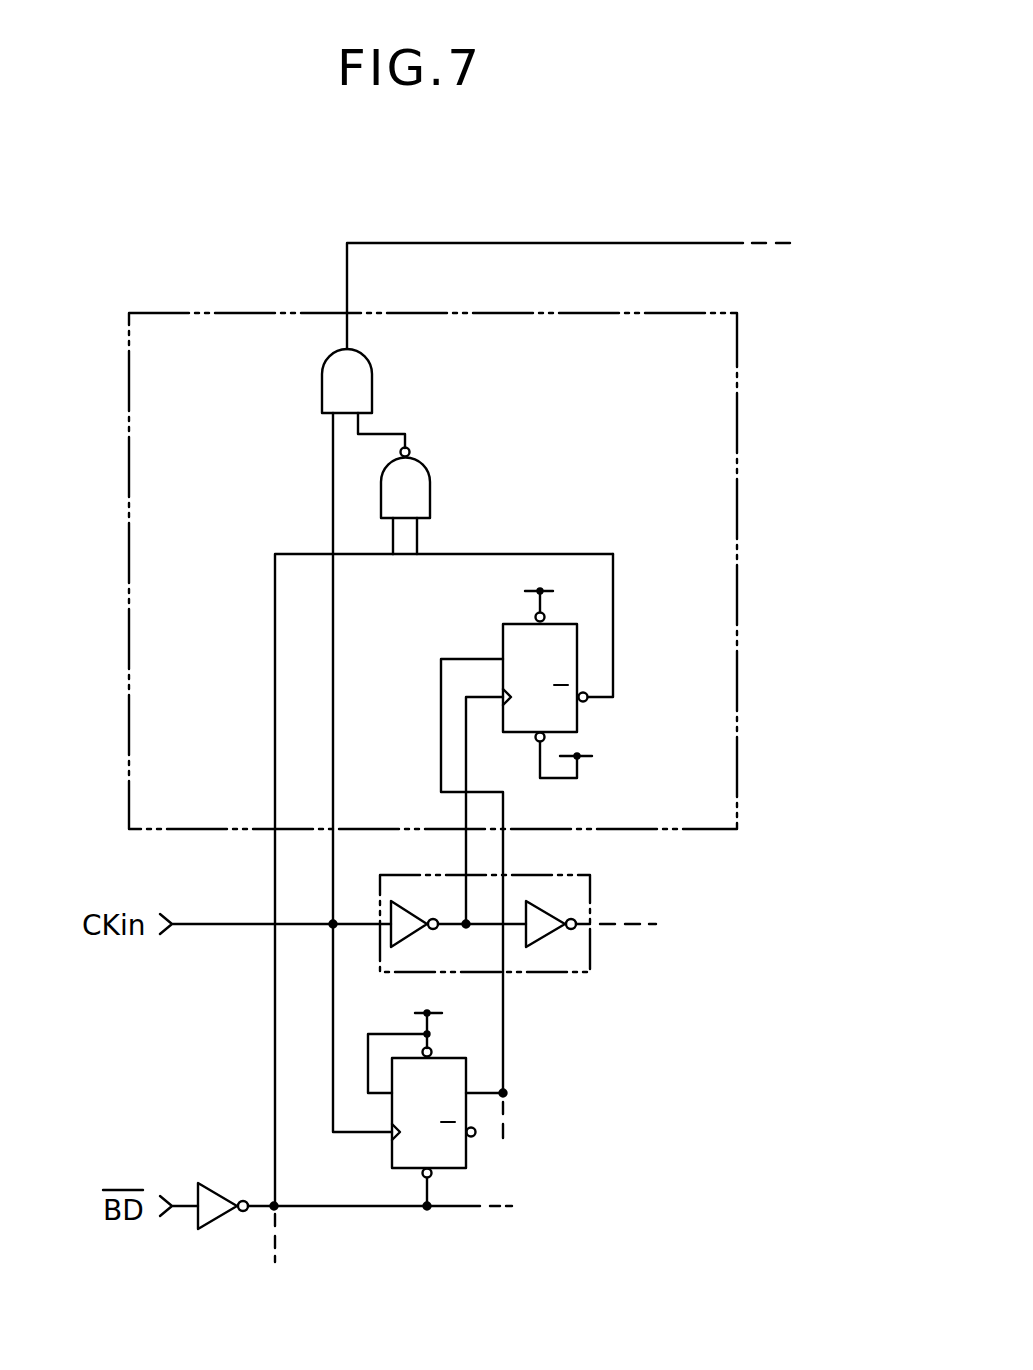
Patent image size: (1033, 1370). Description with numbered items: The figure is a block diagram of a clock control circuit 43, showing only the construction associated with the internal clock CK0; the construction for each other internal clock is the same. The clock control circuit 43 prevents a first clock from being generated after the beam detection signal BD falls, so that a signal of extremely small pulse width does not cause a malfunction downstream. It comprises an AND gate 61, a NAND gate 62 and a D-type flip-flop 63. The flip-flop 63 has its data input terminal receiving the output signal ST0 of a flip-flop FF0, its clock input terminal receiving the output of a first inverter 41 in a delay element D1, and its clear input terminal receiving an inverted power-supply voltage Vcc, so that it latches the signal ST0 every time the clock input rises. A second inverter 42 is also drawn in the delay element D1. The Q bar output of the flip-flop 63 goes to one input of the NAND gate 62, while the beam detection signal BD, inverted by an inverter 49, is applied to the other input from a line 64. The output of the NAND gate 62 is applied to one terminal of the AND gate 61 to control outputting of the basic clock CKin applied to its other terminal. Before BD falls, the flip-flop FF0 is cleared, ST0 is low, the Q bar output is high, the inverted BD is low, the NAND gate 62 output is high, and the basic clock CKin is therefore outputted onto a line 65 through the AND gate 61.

The line 65 is at (614, 242).
The AND gate 61 is at (367, 385).
The NAND gate 62 is at (420, 486).
The clock control circuit 43 is at (735, 415).
The D-type flip-flop 63 is at (503, 630).
The line 64 is at (274, 1042).
The inverter 49 is at (212, 1200).
The first inverter 41 is at (410, 934).
The inverter 42 is at (546, 932).
The delay element D1 is at (590, 885).
The flip-flop FF0 is at (465, 1160).